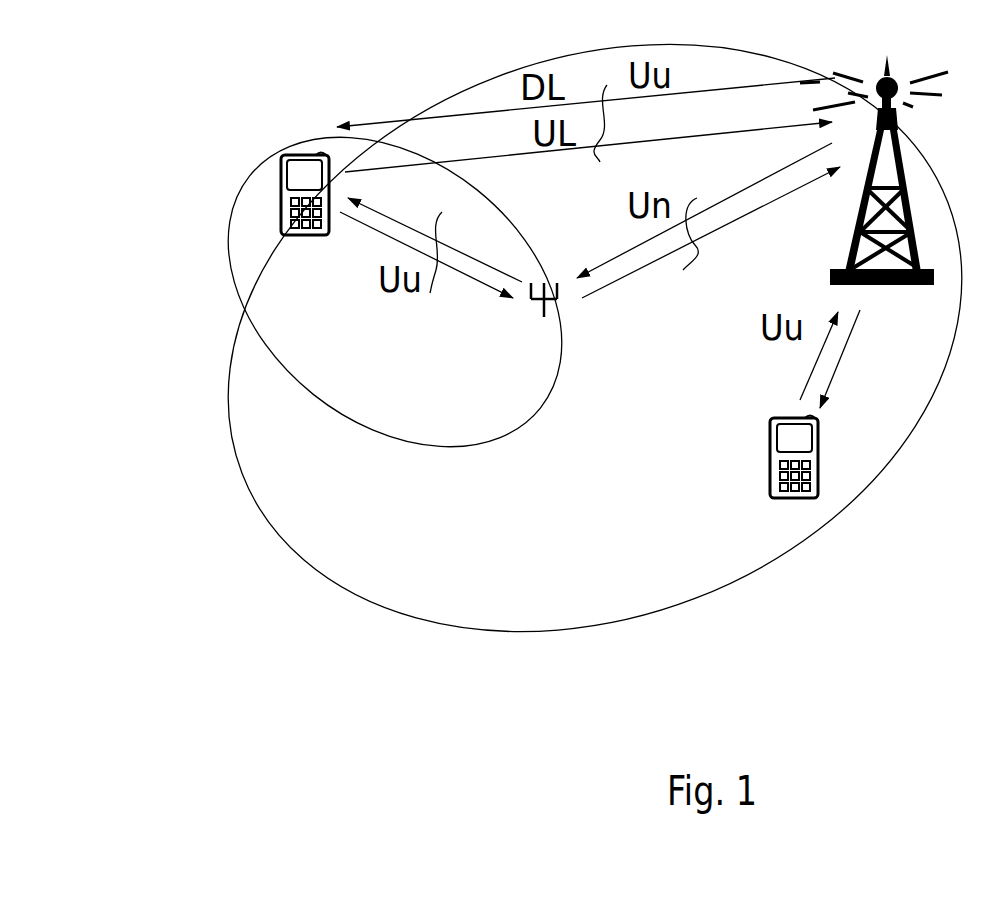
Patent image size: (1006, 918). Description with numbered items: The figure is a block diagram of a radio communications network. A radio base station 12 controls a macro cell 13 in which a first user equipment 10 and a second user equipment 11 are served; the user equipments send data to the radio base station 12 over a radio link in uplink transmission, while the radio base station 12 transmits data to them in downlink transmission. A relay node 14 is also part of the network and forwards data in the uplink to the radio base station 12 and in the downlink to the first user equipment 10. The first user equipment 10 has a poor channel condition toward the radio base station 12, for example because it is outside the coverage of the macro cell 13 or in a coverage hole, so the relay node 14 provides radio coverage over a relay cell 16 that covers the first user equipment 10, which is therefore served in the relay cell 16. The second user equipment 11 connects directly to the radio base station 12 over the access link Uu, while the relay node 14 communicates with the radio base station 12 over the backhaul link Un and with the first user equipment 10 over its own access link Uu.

The first user equipment 10 is at (286, 198).
The second user equipment 11 is at (778, 467).
The radio base station 12 is at (904, 178).
The macro cell 13 is at (407, 512).
The relay node 14 is at (537, 362).
The relay cell 16 is at (386, 371).